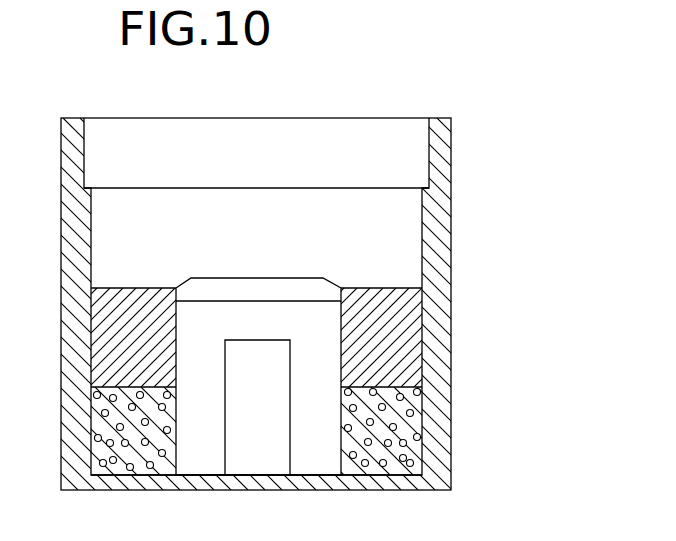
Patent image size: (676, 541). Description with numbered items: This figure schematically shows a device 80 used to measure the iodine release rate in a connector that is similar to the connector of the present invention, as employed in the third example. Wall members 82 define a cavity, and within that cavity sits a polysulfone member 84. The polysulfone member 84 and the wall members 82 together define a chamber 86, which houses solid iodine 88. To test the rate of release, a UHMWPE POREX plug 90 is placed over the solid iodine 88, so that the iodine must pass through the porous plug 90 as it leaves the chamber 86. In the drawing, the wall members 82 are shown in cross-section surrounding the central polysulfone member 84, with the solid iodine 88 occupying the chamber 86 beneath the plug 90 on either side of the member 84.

The device 80 is at (463, 278).
The wall members 82 is at (438, 358).
The polysulfone member 84 is at (294, 293).
The chamber 86 is at (425, 452).
The solid iodine 88 is at (413, 418).
The UHMWPE POREX plug 90 is at (388, 313).